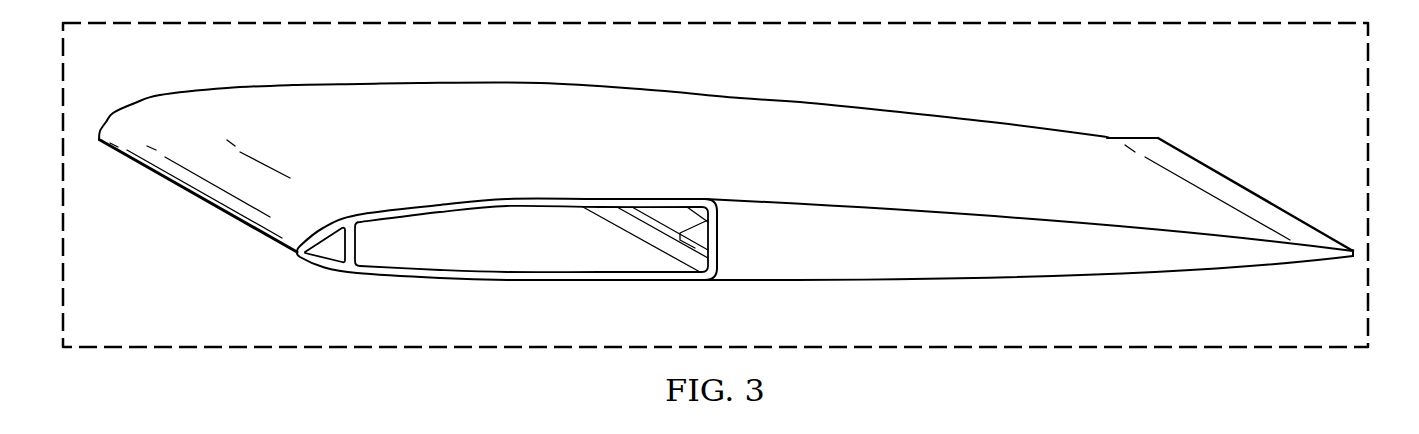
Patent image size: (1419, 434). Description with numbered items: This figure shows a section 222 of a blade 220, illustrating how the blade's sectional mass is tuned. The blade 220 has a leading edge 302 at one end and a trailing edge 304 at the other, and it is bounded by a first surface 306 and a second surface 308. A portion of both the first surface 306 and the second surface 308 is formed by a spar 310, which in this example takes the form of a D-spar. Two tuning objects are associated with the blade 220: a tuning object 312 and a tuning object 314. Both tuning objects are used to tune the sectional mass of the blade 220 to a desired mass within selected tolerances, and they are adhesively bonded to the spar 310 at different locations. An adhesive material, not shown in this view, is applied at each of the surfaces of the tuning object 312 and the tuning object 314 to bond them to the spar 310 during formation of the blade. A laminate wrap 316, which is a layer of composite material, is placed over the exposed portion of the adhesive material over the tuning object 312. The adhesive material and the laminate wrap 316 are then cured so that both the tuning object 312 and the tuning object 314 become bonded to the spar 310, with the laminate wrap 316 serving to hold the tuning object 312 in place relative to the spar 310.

The blade 220 is at (726, 184).
The section 222 is at (258, 358).
The leading edge 302 is at (191, 219).
The trailing edge 304 is at (1248, 166).
The first surface 306 is at (382, 93).
The second surface 308 is at (797, 283).
The spar 310 is at (545, 268).
The tuning object 312 is at (690, 245).
The tuning object 314 is at (333, 248).
The laminate wrap 316 is at (663, 242).